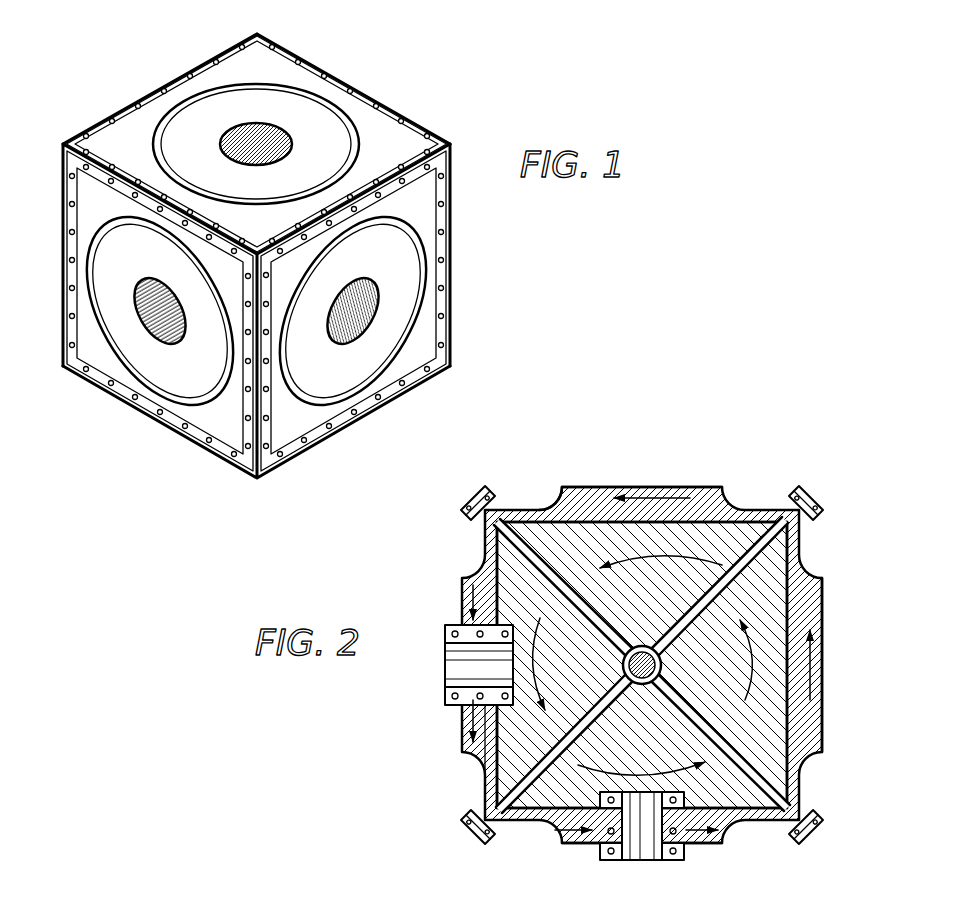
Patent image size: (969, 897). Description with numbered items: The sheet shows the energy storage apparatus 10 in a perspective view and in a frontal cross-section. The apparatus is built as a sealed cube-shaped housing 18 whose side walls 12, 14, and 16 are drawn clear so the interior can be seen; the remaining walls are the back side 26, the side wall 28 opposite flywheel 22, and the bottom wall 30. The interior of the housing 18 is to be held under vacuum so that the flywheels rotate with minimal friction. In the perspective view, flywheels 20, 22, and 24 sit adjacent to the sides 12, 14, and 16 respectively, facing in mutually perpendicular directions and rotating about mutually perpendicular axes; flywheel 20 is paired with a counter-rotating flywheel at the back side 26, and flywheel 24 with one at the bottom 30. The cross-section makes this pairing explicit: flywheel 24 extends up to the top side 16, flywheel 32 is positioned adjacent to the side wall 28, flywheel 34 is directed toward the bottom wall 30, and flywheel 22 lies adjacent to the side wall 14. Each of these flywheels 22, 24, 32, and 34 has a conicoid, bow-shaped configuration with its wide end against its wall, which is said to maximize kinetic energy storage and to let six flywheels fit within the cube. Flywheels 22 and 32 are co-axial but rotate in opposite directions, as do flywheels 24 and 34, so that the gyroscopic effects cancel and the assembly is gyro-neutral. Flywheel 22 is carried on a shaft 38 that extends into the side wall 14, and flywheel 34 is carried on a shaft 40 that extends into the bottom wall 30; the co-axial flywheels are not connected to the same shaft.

In FIG. 1, the energy storage apparatus 10 is at (132, 445).
In FIG. 1, the side wall 12 is at (307, 423).
In FIG. 1, the side wall 14 is at (228, 437).
In FIG. 2, the side wall 14 is at (488, 776).
In FIG. 1, the top side 16 is at (275, 44).
In FIG. 2, the top side 16 is at (753, 503).
In FIG. 1, the housing 18 is at (418, 118).
In FIG. 2, the housing 18 is at (555, 502).
In FIG. 1, the flywheel 20 is at (408, 273).
In FIG. 1, the flywheel 22 is at (168, 385).
In FIG. 2, the flywheel 22 is at (508, 578).
In FIG. 1, the flywheel 24 is at (318, 110).
In FIG. 2, the flywheel 24 is at (688, 498).
In FIG. 1, the back side 26 is at (125, 105).
In FIG. 1, the side wall 28 is at (450, 227).
In FIG. 2, the side wall 28 is at (800, 578).
In FIG. 1, the bottom wall 30 is at (243, 472).
In FIG. 2, the bottom wall 30 is at (587, 835).
In FIG. 2, the flywheel 32 is at (772, 755).
In FIG. 2, the flywheel 34 is at (557, 798).
In FIG. 2, the shaft 38 is at (446, 676).
In FIG. 2, the shaft 40 is at (663, 853).